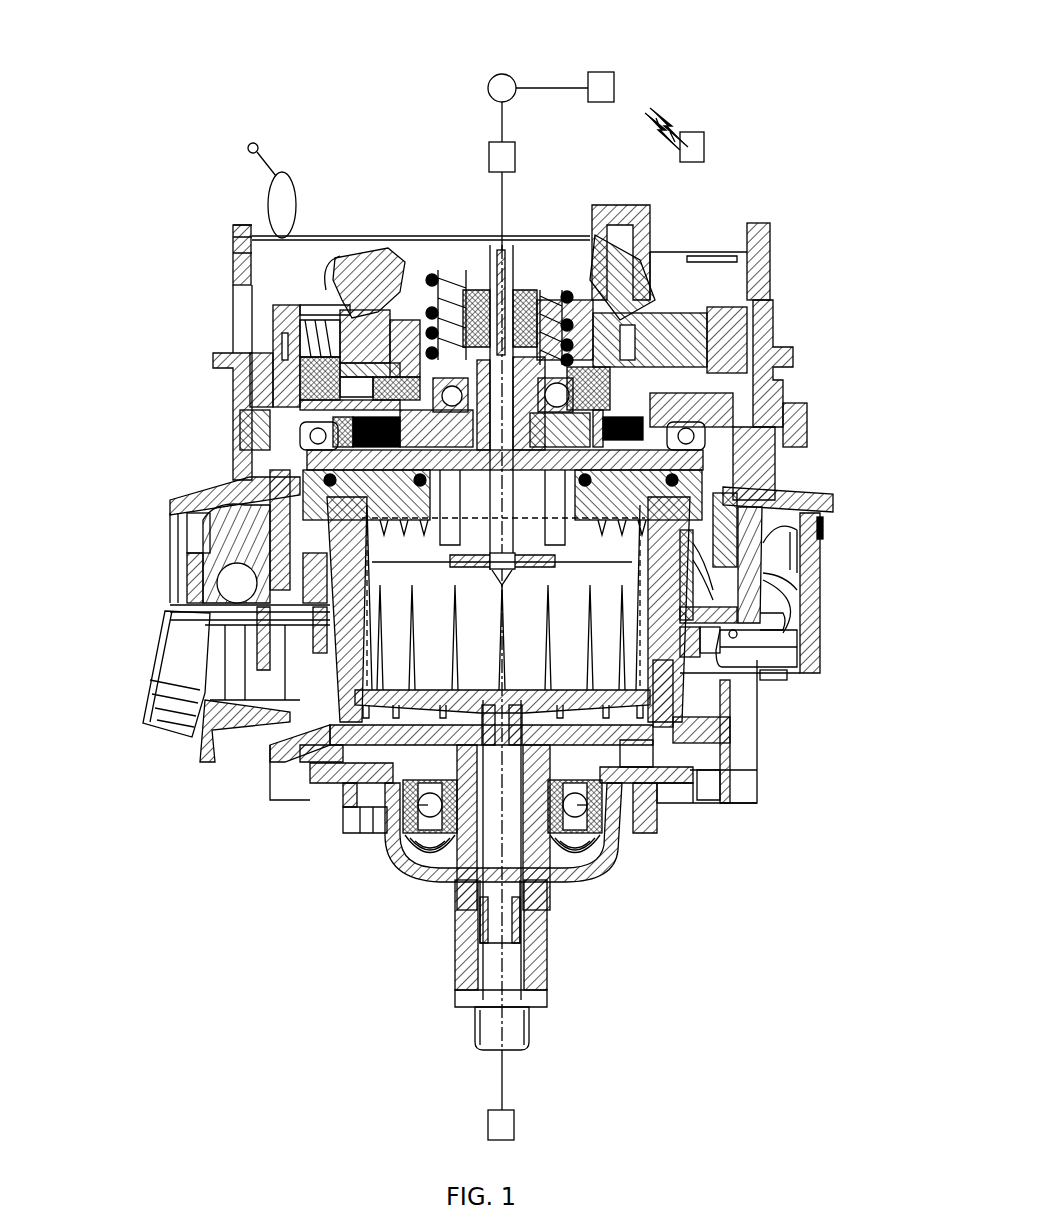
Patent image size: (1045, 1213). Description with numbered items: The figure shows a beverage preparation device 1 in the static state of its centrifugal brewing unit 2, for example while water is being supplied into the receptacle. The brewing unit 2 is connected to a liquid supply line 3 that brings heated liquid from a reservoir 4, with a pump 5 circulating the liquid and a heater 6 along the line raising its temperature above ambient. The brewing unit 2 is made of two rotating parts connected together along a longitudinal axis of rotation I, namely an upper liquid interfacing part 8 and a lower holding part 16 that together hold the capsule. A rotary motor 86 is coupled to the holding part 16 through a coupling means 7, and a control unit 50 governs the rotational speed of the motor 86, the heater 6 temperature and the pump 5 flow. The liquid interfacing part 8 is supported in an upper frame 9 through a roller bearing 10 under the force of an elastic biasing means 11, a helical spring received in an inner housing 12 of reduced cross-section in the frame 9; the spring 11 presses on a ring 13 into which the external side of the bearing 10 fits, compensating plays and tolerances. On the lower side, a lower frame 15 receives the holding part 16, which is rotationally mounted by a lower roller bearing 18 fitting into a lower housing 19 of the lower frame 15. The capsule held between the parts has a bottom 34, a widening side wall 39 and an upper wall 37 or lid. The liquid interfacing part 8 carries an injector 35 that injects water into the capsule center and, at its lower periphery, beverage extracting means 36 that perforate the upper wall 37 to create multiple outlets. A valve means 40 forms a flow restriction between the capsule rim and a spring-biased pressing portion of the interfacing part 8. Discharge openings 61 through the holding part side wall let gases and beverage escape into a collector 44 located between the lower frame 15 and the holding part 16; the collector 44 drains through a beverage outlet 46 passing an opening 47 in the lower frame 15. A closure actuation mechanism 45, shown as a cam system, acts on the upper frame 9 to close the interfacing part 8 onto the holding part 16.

The device 1 is at (267, 102).
The centrifugal brewing unit 2 is at (539, 850).
The liquid supply line 3 is at (502, 126).
The reservoir 4 is at (600, 72).
The pump 5 is at (488, 91).
The heater 6 is at (489, 159).
The coupling means 7 is at (503, 1078).
The liquid interfacing part 8 is at (590, 320).
The upper frame 9 is at (778, 230).
The roller bearing 10 is at (302, 444).
The elastic biasing means 11 is at (558, 242).
The inner housing 12 is at (405, 262).
The ring 13 is at (240, 401).
The lower frame 15 is at (725, 765).
The lower holding part 16 is at (323, 762).
The lower roller bearing 18 is at (405, 856).
The lower housing 19 is at (597, 875).
The bottom 34 is at (564, 678).
The injector 35 is at (495, 582).
The beverage extracting means 36 is at (741, 500).
The upper wall 37 is at (453, 520).
The side wall 39 is at (369, 545).
The valve means 40 is at (733, 465).
The collector 44 is at (192, 626).
The closure actuation mechanism 45 is at (288, 176).
The beverage outlet 46 is at (140, 717).
The opening 47 is at (234, 722).
The control unit 50 is at (705, 148).
The discharge openings 61 is at (728, 433).
The rotary motor 86 is at (514, 1125).
The axis of rotation I is at (505, 965).